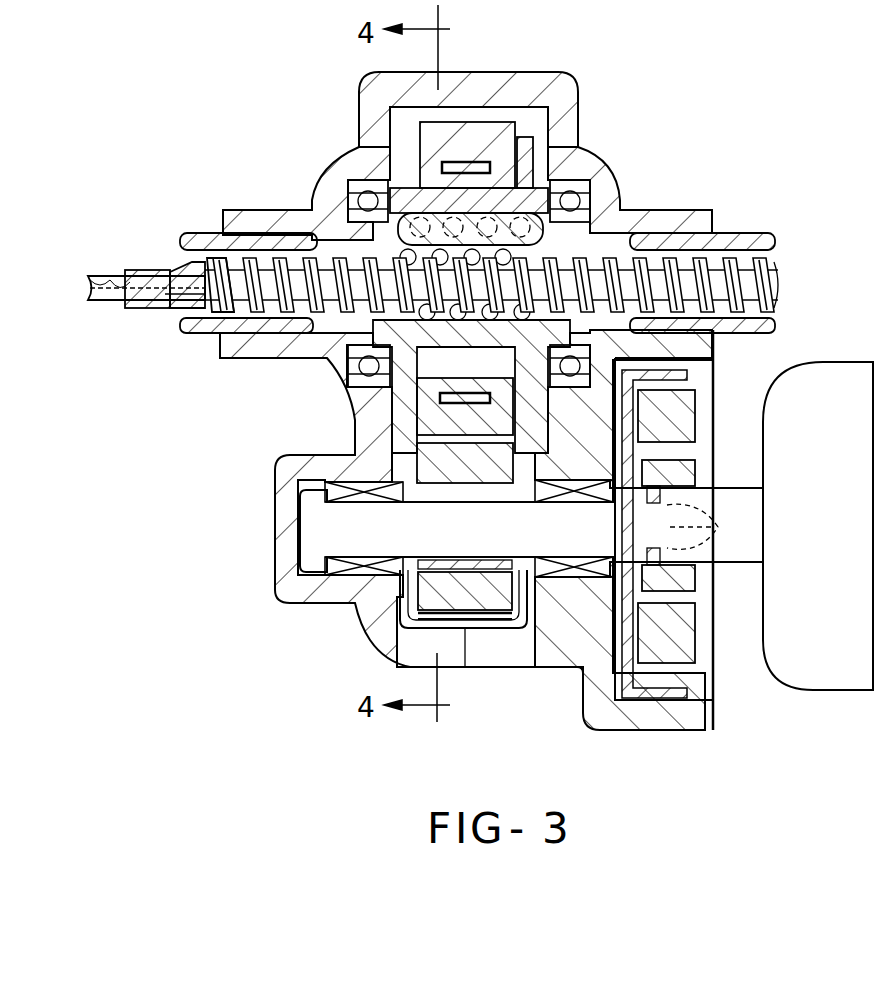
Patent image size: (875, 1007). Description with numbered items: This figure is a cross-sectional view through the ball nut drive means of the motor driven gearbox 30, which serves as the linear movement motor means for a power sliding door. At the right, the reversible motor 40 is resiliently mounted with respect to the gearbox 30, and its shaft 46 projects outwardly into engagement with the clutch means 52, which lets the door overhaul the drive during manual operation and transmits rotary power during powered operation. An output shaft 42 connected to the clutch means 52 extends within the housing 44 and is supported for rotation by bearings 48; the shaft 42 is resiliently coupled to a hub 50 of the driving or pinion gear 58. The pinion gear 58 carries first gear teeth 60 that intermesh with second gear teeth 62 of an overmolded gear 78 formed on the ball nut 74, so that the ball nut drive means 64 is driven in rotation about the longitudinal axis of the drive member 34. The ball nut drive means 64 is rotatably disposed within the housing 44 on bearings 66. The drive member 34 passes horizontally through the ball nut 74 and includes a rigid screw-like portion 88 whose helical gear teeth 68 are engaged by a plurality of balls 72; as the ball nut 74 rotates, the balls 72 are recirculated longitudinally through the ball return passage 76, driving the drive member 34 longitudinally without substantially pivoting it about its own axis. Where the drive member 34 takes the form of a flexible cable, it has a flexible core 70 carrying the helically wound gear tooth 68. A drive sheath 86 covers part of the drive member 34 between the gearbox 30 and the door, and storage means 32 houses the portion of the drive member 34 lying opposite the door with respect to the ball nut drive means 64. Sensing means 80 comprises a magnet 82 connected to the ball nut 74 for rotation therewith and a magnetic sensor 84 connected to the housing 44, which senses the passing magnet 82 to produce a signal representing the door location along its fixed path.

The motor driven gearbox 30 is at (272, 583).
The storage means 32 is at (744, 232).
The drive member 34 is at (177, 262).
The reversible motor 40 is at (826, 362).
The output shaft 42 is at (318, 527).
The housing 44 is at (298, 605).
The shaft 46 is at (738, 487).
The bearings 48 is at (318, 493).
The hub 50 is at (430, 593).
The clutch means 52 is at (705, 652).
The pinion gear 58 is at (500, 622).
The first gear teeth 60 is at (407, 627).
The second gear teeth 62 is at (430, 120).
The ball nut drive means 64 is at (403, 178).
The bearings 66 is at (348, 182).
The helical gear teeth 68 is at (228, 262).
The flexible core 70 is at (177, 293).
The balls 72 is at (295, 356).
The ball nut 74 is at (420, 363).
The ball return passage 76 is at (517, 230).
The overmolded gear 78 is at (492, 150).
The sensing means 80 is at (600, 407).
The magnet 82 is at (537, 150).
The magnetic sensor 84 is at (590, 423).
The drive sheath 86 is at (187, 330).
The rigid screw-like portion 88 is at (170, 263).